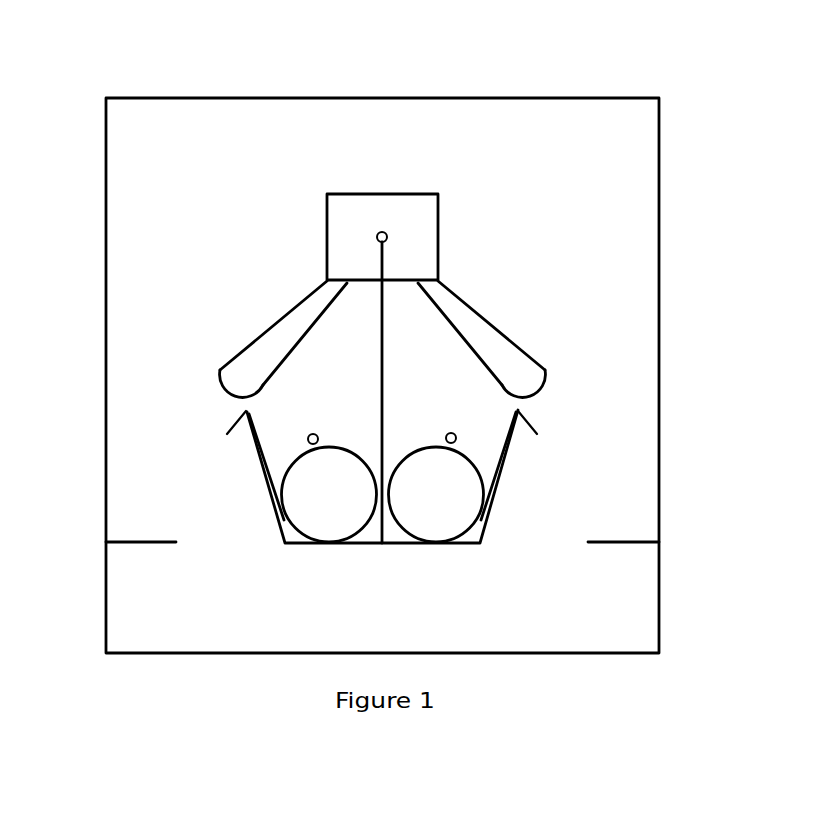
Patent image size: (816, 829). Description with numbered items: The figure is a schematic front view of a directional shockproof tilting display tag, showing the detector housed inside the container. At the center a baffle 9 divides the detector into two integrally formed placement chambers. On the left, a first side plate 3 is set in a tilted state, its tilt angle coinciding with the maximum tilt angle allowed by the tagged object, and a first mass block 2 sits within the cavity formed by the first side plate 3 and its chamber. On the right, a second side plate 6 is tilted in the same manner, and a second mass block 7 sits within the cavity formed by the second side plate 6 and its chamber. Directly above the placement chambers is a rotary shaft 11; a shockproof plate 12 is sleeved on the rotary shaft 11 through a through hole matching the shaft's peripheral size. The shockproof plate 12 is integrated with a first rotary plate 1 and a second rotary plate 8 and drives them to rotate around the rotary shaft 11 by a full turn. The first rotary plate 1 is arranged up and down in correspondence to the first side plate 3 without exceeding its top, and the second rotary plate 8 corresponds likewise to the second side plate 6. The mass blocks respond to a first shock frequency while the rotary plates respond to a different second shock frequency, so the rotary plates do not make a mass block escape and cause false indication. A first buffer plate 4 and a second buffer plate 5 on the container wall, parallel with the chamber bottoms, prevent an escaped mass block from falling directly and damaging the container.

The first rotary plate 1 is at (292, 316).
The first mass block 2 is at (219, 371).
The first side plate 3 is at (265, 484).
The first buffer plate 4 is at (131, 540).
The second buffer plate 5 is at (595, 540).
The second side plate 6 is at (507, 450).
The second mass block 7 is at (443, 468).
The second rotary plate 8 is at (492, 332).
The baffle 9 is at (384, 318).
The rotary shaft 11 is at (384, 235).
The shockproof plate 12 is at (347, 203).